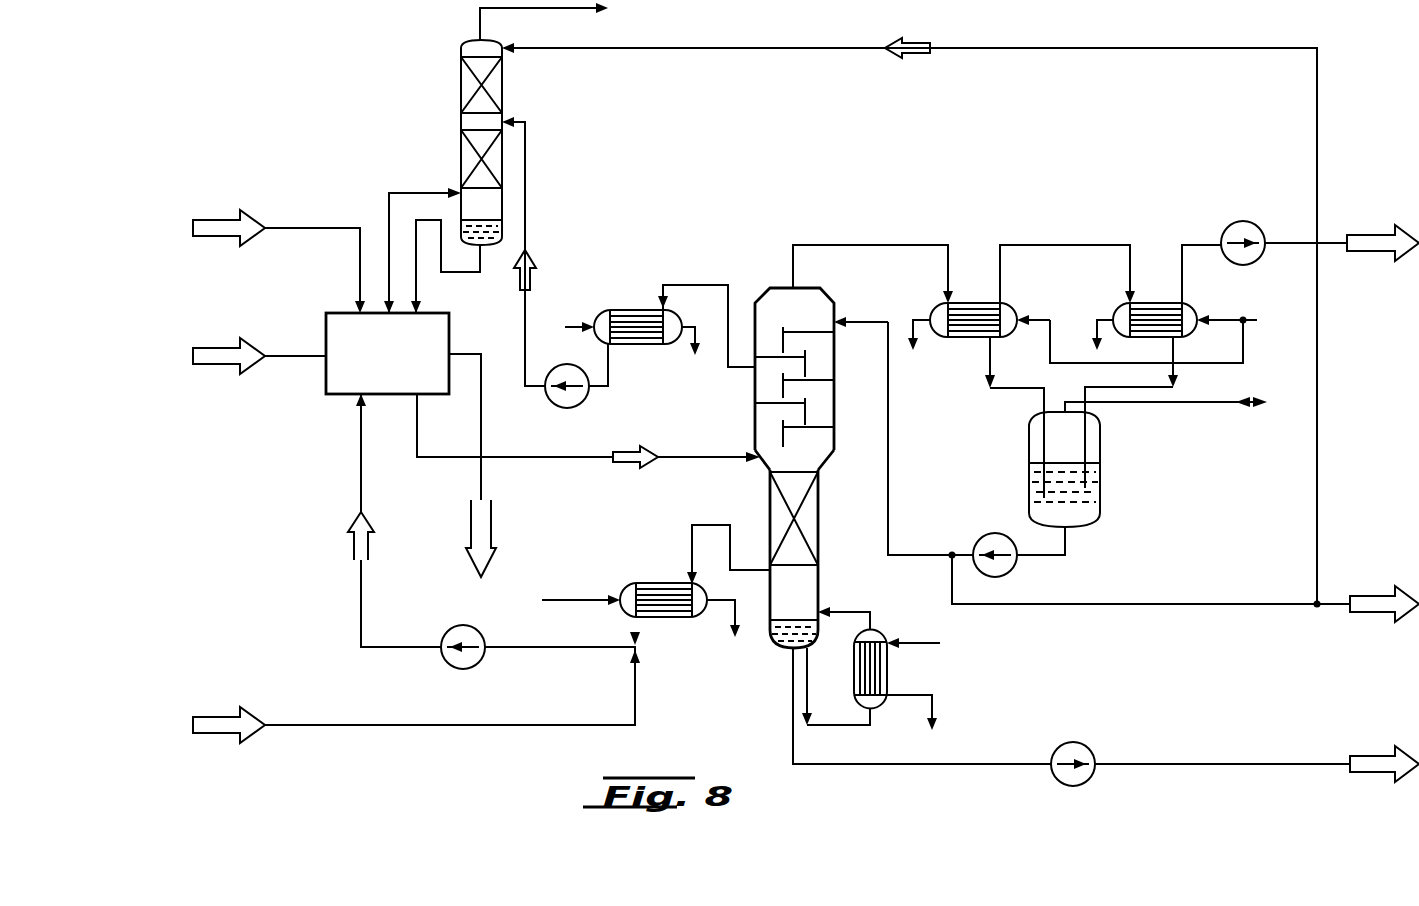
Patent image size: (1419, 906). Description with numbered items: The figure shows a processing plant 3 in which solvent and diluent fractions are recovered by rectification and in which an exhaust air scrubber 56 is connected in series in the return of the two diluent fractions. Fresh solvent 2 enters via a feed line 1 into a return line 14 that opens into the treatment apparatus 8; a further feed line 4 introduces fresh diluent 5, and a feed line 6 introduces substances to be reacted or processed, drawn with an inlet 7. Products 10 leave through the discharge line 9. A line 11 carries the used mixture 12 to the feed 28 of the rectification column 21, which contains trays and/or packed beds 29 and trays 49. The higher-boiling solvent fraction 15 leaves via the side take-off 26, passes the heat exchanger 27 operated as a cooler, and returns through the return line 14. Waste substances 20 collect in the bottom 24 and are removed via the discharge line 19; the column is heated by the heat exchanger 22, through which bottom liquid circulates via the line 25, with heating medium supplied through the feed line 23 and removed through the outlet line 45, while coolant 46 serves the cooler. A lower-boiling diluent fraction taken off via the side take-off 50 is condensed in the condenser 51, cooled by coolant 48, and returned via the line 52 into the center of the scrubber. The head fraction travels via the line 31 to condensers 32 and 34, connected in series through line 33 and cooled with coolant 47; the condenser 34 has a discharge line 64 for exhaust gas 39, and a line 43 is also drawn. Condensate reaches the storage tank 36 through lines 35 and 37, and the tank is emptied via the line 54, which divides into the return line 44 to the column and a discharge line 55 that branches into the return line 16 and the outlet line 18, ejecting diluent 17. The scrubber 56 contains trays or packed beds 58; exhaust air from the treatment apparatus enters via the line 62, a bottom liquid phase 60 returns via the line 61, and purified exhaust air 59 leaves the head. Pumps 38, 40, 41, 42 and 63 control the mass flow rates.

The feed line 1 is at (366, 727).
The fresh solvent 2 is at (213, 723).
The processing plant 3 is at (283, 142).
The feed line 4 is at (315, 228).
The fresh diluent 5 is at (218, 226).
The feed line 6 is at (296, 354).
The inlet 7 is at (212, 354).
The treatment apparatus 8 is at (336, 376).
The discharge line 9 is at (481, 440).
The products 10 is at (486, 530).
The line 11 is at (556, 459).
The used mixture 12 is at (627, 462).
The return line 14 is at (361, 610).
The solvent fraction 15 is at (356, 548).
The return line 16 is at (622, 50).
The diluent fraction 17 is at (915, 50).
The outlet line 18 is at (1330, 606).
The discharge line 19 is at (1230, 763).
The waste substances 20 is at (1372, 756).
The rectification column 21 is at (755, 425).
The heat exchanger 22 is at (882, 668).
The feed line 23 is at (918, 642).
The bottom 24 is at (778, 640).
The line 25 is at (858, 611).
The side take-off 26 is at (764, 568).
The heat exchanger 27 is at (672, 614).
The feed 28 is at (760, 462).
The trays and/or packed beds 29 is at (812, 508).
The line 31 is at (862, 244).
The condenser 32 is at (972, 312).
The line 33 is at (1060, 244).
The condenser 34 is at (1157, 312).
The line 35 is at (1003, 390).
The storage tank 36 is at (1102, 481).
The line 37 is at (1155, 390).
The pump 38 is at (1243, 230).
The exhaust gas 39 is at (1370, 240).
The pump 40 is at (995, 533).
The pump 41 is at (1073, 742).
The pump 42 is at (472, 667).
The vent line 43 is at (1203, 404).
The return line 44 is at (890, 450).
The outlet line 45 is at (934, 706).
The coolant 46 is at (600, 600).
The coolant 47 is at (1253, 318).
The coolant 48 is at (572, 325).
The trays 49 is at (822, 381).
The side take-off 50 is at (728, 369).
The condenser 51 is at (636, 318).
The line 52 is at (527, 146).
The line 54 is at (1066, 546).
The discharge line 55 is at (1240, 602).
The exhaust air scrubber 56 is at (461, 122).
The trays or packed beds 58 is at (468, 85).
The purified exhaust air 59 is at (480, 18).
The bottom liquid phase 60 is at (492, 226).
The line 61 is at (470, 273).
The line 62 is at (389, 200).
The pump 63 is at (568, 404).
The discharge line 64 is at (1198, 244).